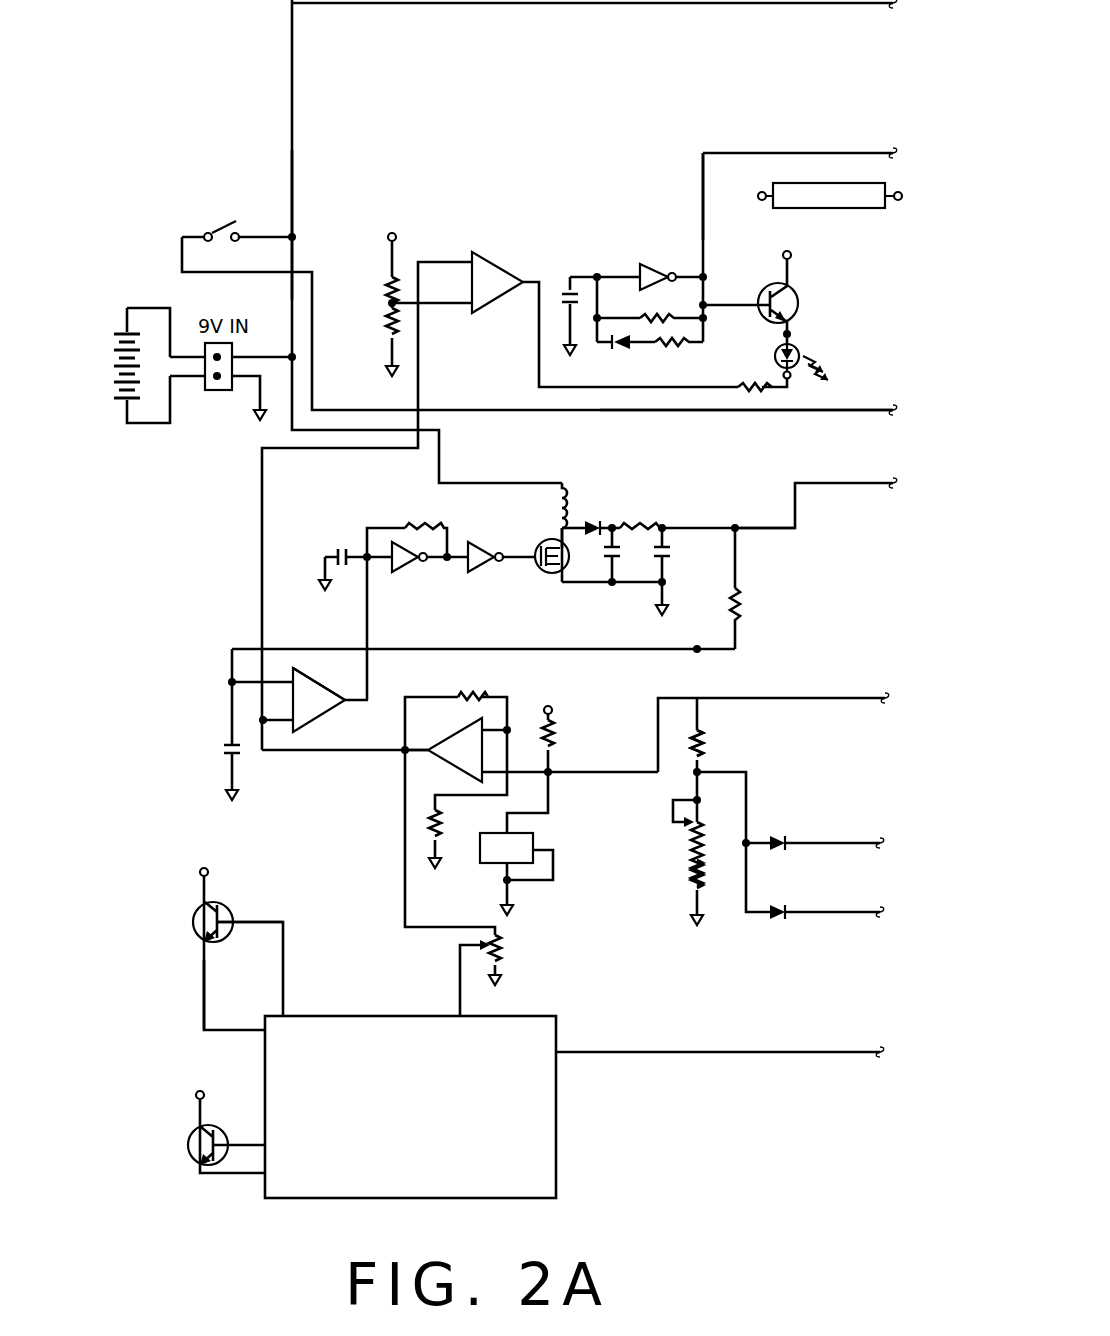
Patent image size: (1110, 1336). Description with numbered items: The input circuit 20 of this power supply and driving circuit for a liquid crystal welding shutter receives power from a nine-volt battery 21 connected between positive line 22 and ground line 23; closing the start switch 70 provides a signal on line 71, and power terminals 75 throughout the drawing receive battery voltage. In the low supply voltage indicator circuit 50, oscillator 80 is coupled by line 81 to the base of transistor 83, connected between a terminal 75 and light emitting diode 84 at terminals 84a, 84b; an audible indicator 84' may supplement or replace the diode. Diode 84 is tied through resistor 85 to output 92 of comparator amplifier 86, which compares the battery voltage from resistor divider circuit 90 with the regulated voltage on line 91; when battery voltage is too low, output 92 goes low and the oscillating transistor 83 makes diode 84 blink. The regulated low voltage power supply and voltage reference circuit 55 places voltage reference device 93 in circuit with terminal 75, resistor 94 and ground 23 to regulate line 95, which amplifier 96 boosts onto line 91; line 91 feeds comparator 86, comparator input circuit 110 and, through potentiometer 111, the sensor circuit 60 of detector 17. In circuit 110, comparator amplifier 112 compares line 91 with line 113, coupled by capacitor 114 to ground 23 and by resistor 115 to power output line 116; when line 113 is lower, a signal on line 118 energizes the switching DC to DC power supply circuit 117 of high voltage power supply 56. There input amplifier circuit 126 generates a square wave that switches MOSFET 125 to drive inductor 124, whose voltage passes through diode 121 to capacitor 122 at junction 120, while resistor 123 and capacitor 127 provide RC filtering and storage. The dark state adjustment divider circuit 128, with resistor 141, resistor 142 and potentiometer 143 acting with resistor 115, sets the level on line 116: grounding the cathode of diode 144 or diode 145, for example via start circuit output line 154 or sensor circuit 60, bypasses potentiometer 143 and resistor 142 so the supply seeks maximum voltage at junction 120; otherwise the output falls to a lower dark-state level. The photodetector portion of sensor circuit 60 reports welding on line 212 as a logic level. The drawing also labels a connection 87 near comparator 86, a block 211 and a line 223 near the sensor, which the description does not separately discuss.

The detector 17 is at (194, 922).
The input circuit 20 is at (303, 196).
The electrical storage battery 21 is at (113, 347).
The positive electrical line 22 is at (797, 5).
The ground potential line 23 is at (256, 420).
The low supply voltage indicator circuit 50 is at (716, 137).
The regulated low voltage power supply and voltage reference circuit 55 is at (710, 722).
The high voltage power supply 56 is at (672, 465).
The sensor circuit 60 is at (186, 983).
The momentary contact start switch 70 is at (232, 244).
The line 71 is at (852, 418).
The power terminals 75 is at (388, 239).
The oscillator 80 is at (657, 250).
The line 81 is at (703, 190).
The transistor 83 is at (800, 307).
The light emitting diode 84 is at (833, 359).
The terminal 84a is at (762, 192).
The terminal 84b is at (902, 192).
The audible signal indicator 84' is at (842, 209).
The resistor 85 is at (750, 392).
The comparator amplifier 86 is at (496, 258).
The comparator input line 87 is at (420, 340).
The resistor divider circuit 90 is at (390, 304).
The line 91 is at (432, 260).
The output 92 is at (539, 357).
The voltage reference device 93 is at (530, 832).
The resistor 94 is at (556, 746).
The line 95 is at (655, 718).
The amplifier 96 is at (457, 696).
The comparator input circuit 110 is at (378, 683).
The adjustable potentiometer 111 is at (502, 946).
The comparator amplifier 112 is at (342, 634).
The line 113 is at (245, 640).
The capacitor 114 is at (225, 750).
The resistor 115 is at (733, 594).
The power output line 116 is at (773, 525).
The high voltage switching DC to DC power supply circuit 117 is at (556, 472).
The line 118 is at (368, 602).
The junction 120 is at (615, 524).
The diode 121 is at (592, 522).
The capacitor 122 is at (608, 556).
The resistor 123 is at (641, 526).
The inductor 124 is at (555, 497).
The field effect transistor 125 is at (545, 541).
The input amplifier circuit 126 is at (426, 515).
The capacitor 127 is at (707, 560).
The dark state adjustment resistance divider circuit 128 is at (733, 766).
The resistor 141 is at (705, 750).
The resistor 142 is at (705, 872).
The potentiometer 143 is at (700, 829).
The diode 144 is at (773, 835).
The diode 145 is at (773, 905).
The output line 154 is at (848, 848).
The control module 211 is at (558, 1147).
The line 212 is at (682, 1050).
The transistor base line 223 is at (286, 930).